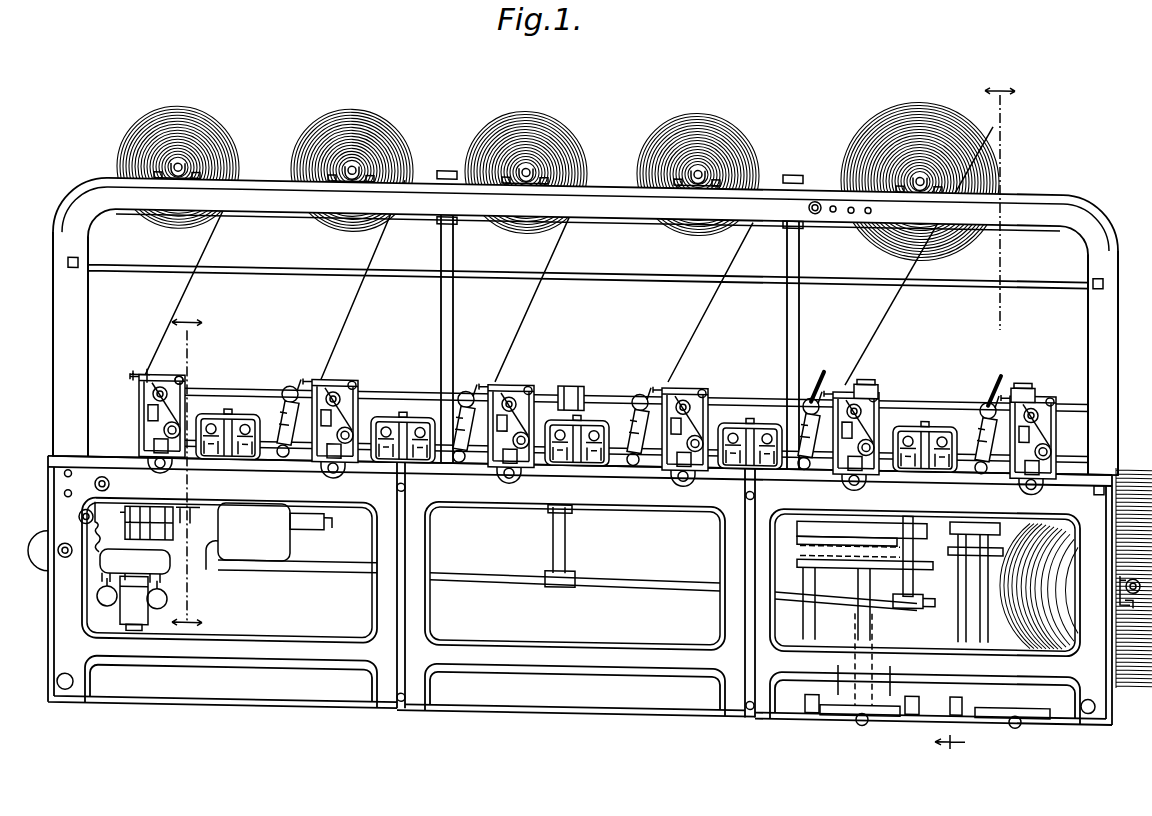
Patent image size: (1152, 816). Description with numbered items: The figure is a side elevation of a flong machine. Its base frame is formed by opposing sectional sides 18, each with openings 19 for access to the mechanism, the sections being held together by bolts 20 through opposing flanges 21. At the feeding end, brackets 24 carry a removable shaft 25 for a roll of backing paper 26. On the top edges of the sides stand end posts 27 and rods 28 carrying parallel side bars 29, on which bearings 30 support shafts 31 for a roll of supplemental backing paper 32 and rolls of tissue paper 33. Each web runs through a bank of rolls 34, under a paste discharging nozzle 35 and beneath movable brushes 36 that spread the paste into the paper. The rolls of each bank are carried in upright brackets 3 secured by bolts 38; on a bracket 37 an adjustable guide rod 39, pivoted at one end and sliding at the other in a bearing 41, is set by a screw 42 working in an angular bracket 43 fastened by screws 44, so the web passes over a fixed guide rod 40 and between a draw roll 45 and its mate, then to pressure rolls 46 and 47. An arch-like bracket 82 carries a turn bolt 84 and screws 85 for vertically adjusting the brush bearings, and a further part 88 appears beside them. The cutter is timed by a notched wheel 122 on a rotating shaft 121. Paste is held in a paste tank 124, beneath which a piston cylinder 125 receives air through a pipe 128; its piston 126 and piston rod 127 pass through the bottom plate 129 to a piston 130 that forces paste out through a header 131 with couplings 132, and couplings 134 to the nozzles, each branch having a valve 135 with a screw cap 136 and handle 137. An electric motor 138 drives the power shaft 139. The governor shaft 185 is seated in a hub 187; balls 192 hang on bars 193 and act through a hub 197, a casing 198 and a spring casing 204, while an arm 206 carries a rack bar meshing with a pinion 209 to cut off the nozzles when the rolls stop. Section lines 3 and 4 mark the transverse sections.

The upright frame-like brackets 3 is at (975, 428).
The section line 4— 4 is at (187, 472).
The sectional sides 18 is at (580, 473).
The openings 19 is at (581, 609).
The bolts 20 is at (750, 704).
The flanges 21 is at (410, 500).
The brackets 24 is at (1120, 565).
The removable shaft 25 is at (1128, 584).
The roll of backing paper 26 is at (1122, 445).
The end posts 27 is at (1086, 316).
The rods 28 is at (786, 314).
The side bars 29 is at (626, 210).
The bearings 30 is at (940, 176).
The shafts 31 is at (926, 160).
The roll of supplemental backing paper 32 is at (919, 86).
The rolls of tissue paper 33 is at (700, 108).
The bank of rolls 34 is at (1048, 395).
The paste discharging nozzle 35 is at (982, 408).
The movable brushes 36 is at (915, 412).
The bracket 37 is at (312, 452).
The bolts 38 is at (700, 452).
The adjustable guide rod 39 is at (168, 374).
The fixed guide rod 40 is at (184, 377).
The sliding bearing 41 is at (340, 374).
The screw 42 is at (505, 376).
The angular bracket 43 is at (147, 368).
The screws 44 is at (690, 376).
The draw roll 45 is at (520, 380).
The pressure roll 46 is at (160, 428).
The pressure roll 47 is at (838, 462).
The arch like bracket 82 is at (945, 446).
The turn bolt 84 is at (735, 486).
The screws 85 is at (760, 410).
The bracket plate 88 is at (765, 418).
The rotating shaft 121 is at (50, 525).
The notched wheel 122 is at (100, 560).
The paste tank 124 is at (800, 522).
The piston cylinder 125 is at (830, 610).
The piston 126 is at (850, 668).
The piston rod 127 is at (890, 632).
The pipe 128 is at (1012, 704).
The bottom plate 129 is at (800, 550).
The piston 130 is at (790, 585).
The header 131 is at (625, 384).
The couplings 132 is at (575, 375).
The couplings 134 is at (990, 380).
The valve 135 is at (1032, 370).
The screw cap 136 is at (1025, 365).
The handle 137 is at (858, 360).
The electric motor 138 is at (262, 546).
The power shaft 139 is at (640, 515).
The governor shaft 185 is at (140, 505).
The hub 187 is at (160, 525).
The balls 192 is at (168, 604).
The bars 193 is at (168, 586).
The hub 197 is at (105, 602).
The casing 198 is at (105, 583).
The casing 204 is at (130, 620).
The arm 206 is at (172, 532).
The pinion 209 is at (172, 522).